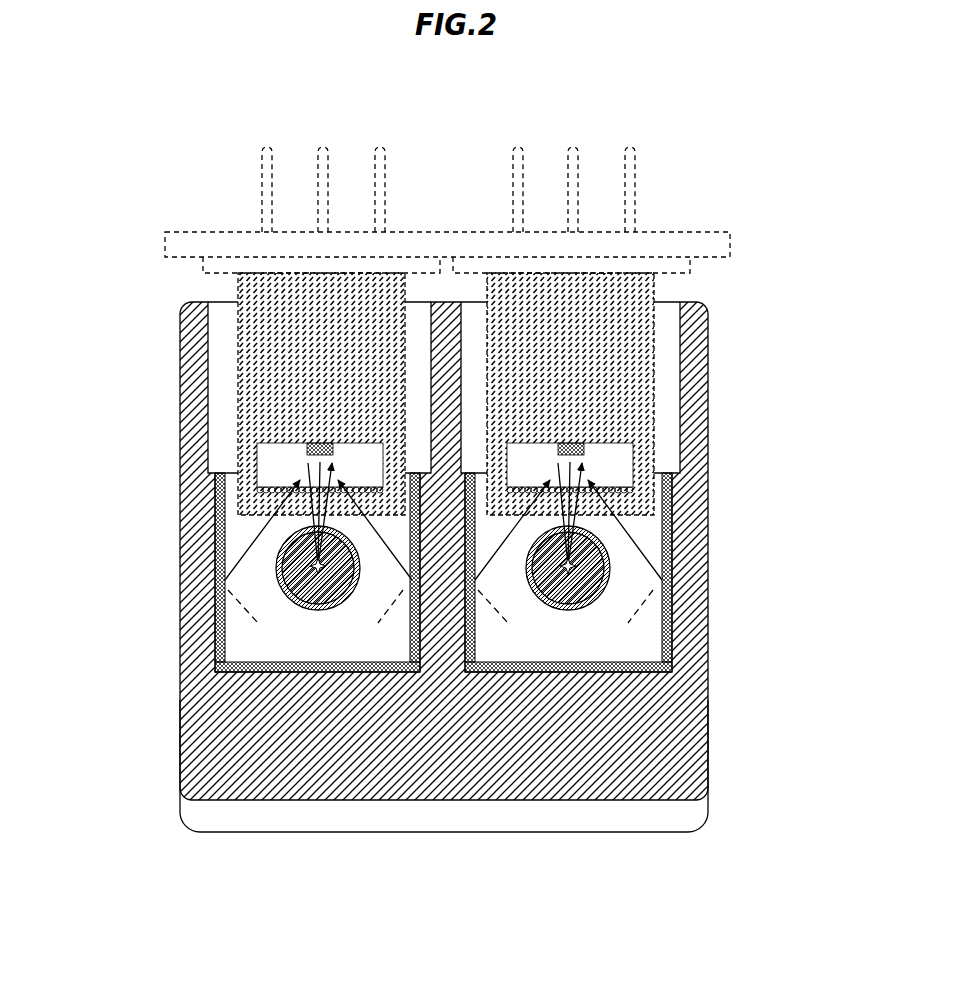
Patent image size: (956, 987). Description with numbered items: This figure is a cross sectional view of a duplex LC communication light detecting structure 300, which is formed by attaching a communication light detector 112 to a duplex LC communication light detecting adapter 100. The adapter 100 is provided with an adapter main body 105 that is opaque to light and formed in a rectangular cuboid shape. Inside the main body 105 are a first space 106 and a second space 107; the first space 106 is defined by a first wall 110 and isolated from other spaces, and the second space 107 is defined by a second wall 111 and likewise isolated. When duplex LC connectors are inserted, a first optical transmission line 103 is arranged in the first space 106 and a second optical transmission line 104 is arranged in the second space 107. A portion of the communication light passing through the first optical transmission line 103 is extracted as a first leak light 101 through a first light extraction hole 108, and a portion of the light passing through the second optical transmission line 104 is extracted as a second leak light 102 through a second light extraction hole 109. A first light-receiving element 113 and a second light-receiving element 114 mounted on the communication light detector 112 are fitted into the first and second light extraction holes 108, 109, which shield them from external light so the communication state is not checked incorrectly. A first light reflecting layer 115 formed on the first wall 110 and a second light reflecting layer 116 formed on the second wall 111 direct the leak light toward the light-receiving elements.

The duplex LC communication light detecting structure 300 is at (157, 177).
The duplex LC communication light detecting adapter 100 is at (152, 352).
The first leak light 101 is at (258, 527).
The second leak light 102 is at (633, 528).
The first optical transmission line 103 is at (318, 574).
The second optical transmission line 104 is at (568, 574).
The adapter main body 105 is at (703, 720).
The first space 106 is at (213, 607).
The second space 107 is at (674, 607).
The first light extraction hole 108 is at (213, 318).
The second light extraction hole 109 is at (463, 316).
The first wall 110 is at (238, 662).
The second wall 111 is at (652, 662).
The communication light detector 112 is at (747, 228).
The first light-receiving element 113 is at (310, 452).
The second light-receiving element 114 is at (582, 452).
The first light reflecting layer 115 is at (383, 672).
The second light reflecting layer 116 is at (478, 672).